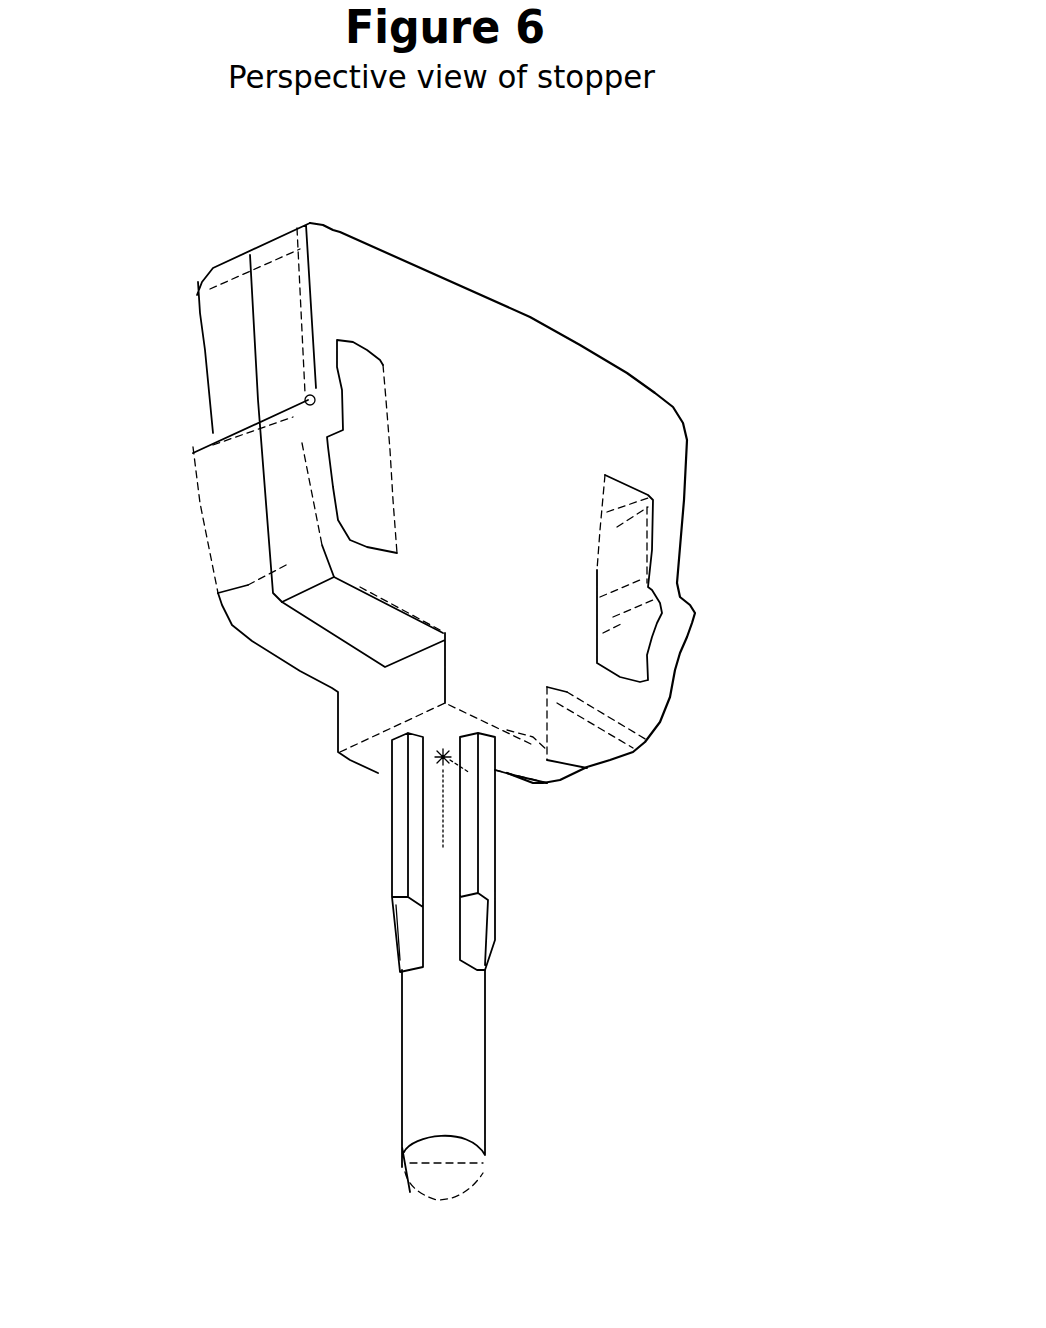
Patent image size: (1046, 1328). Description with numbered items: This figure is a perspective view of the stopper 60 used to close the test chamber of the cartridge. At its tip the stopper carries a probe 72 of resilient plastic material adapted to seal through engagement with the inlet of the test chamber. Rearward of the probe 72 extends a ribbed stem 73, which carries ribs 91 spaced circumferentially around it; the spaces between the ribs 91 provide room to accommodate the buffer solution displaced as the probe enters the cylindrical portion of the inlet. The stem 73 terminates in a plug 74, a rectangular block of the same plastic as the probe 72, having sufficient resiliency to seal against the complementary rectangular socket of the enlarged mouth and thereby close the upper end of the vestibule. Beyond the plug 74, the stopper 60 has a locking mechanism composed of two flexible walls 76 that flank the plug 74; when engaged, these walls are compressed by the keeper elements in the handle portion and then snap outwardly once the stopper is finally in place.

The stopper 60 is at (507, 360).
The flexible walls 76 is at (245, 515).
The plug 74 is at (533, 727).
The ribbed stem 73 is at (430, 908).
The ribs 91 is at (480, 855).
The probe 72 is at (455, 1118).